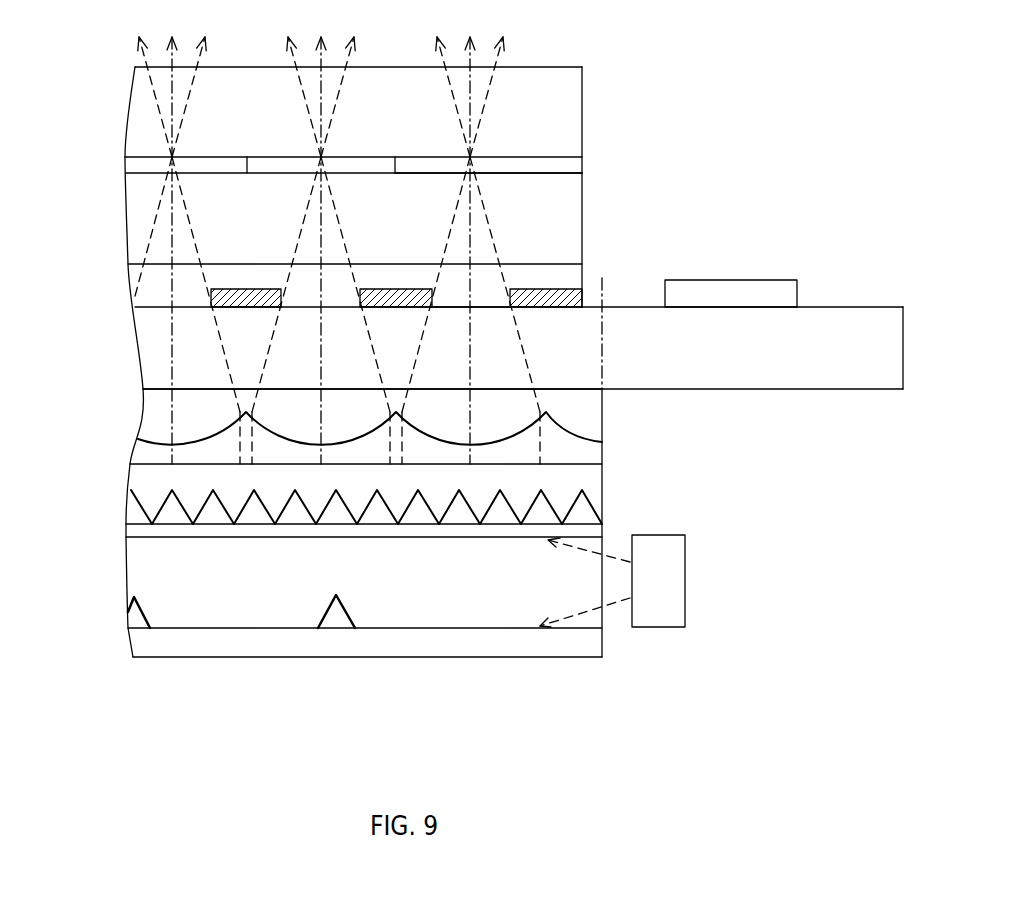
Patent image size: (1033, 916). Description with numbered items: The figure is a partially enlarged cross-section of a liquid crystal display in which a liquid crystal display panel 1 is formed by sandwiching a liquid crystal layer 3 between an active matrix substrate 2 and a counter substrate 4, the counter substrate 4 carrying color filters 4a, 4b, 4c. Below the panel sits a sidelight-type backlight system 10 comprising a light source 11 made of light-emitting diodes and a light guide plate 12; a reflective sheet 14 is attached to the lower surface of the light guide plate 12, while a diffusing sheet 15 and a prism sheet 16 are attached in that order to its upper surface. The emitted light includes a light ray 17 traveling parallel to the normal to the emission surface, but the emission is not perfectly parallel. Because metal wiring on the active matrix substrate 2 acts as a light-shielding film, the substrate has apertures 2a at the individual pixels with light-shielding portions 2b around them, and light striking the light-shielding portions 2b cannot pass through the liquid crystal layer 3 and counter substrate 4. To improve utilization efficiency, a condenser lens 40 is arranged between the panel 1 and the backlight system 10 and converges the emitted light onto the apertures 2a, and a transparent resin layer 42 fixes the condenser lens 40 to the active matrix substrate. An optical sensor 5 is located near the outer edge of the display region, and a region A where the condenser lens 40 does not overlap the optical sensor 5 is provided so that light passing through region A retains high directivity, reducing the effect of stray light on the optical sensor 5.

The liquid crystal display panel 1 is at (59, 67).
The active matrix substrate 2 is at (116, 268).
The apertures 2a is at (508, 316).
The light-shielding portions 2b is at (582, 316).
The liquid crystal layer 3 is at (116, 176).
The counter substrate 4 is at (116, 67).
The color filter 4a is at (558, 162).
The color filter 4b is at (378, 165).
The color filter 4c is at (230, 165).
The optical sensor 5 is at (735, 288).
The region A is at (665, 270).
The backlight system 10 is at (113, 463).
The light source 11 is at (686, 575).
The light guide plate 12 is at (238, 605).
The reflective sheet 14 is at (300, 645).
The diffusing sheet 15 is at (590, 535).
The prism sheet 16 is at (590, 484).
The light ray 17 is at (352, 612).
The condenser lens 40 is at (590, 452).
The transparent resin layer 42 is at (588, 418).